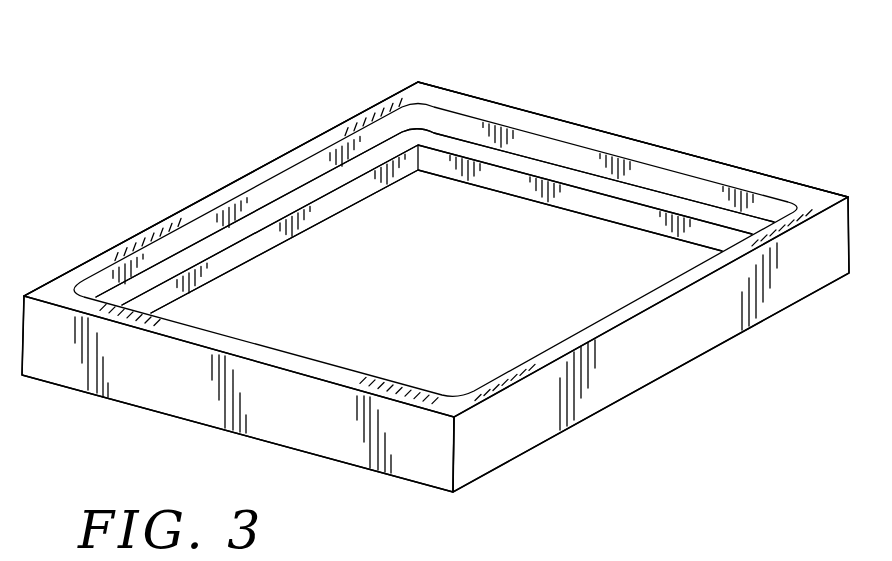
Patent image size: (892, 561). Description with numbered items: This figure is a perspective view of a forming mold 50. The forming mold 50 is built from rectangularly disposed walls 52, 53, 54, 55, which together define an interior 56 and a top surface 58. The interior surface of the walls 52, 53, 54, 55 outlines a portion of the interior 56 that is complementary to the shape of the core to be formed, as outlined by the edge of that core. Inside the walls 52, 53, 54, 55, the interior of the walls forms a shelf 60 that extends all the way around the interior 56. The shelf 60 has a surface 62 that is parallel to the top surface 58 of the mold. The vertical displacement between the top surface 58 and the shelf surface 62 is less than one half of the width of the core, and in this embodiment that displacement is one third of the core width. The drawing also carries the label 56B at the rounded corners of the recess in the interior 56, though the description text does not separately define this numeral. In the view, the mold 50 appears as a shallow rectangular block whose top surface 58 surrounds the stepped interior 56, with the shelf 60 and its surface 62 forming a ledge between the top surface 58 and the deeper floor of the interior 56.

The forming mold 50 is at (247, 153).
The wall 52 is at (683, 358).
The wall 53 is at (157, 378).
The wall 54 is at (97, 253).
The wall 55 is at (682, 150).
The interior 56 is at (424, 302).
The rounded recess wall 56B is at (453, 122).
The top surface 58 is at (317, 140).
The shelf 60 is at (335, 205).
The surface 62 is at (236, 236).